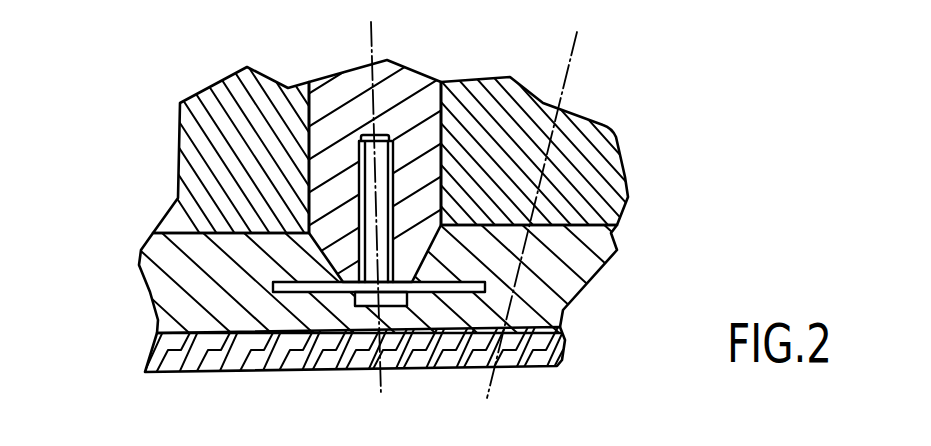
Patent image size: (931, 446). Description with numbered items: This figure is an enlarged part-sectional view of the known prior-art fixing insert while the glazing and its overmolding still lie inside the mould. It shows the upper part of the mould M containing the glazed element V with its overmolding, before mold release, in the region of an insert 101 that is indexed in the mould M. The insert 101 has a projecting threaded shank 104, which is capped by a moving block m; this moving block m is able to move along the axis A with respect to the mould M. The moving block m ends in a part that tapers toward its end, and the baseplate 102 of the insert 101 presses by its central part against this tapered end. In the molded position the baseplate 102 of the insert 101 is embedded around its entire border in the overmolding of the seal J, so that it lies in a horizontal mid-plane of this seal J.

The insert 101 is at (329, 296).
The baseplate 102 is at (448, 282).
The threaded shank 104 is at (352, 140).
The mould M is at (213, 143).
The moving block m is at (338, 92).
The seal J is at (556, 270).
The glazed element V is at (545, 347).
The axis A is at (372, 43).